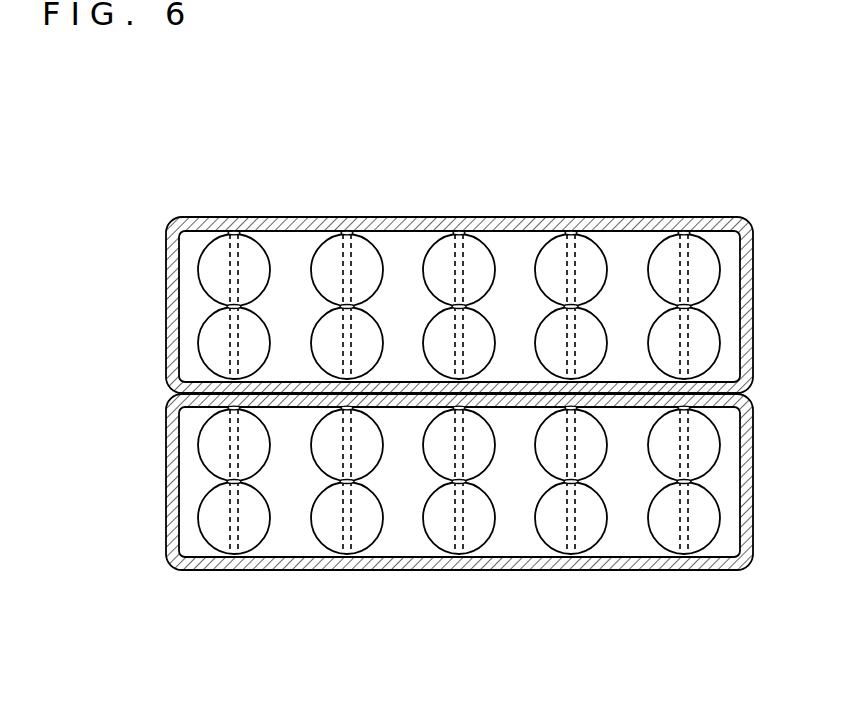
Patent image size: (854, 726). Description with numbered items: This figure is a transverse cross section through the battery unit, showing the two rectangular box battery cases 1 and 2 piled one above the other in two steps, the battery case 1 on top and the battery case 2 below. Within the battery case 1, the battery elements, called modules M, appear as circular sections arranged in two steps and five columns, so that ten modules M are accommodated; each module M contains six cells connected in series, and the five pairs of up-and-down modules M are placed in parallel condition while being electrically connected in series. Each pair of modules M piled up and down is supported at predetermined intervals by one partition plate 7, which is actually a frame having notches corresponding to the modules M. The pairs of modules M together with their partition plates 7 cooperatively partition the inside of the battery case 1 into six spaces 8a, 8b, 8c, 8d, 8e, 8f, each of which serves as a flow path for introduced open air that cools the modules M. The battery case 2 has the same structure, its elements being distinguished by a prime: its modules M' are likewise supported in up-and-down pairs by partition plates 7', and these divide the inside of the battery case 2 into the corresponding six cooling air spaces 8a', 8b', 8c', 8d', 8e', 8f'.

The battery case 1 is at (752, 290).
The battery case 2 is at (166, 463).
The partition plate 7 is at (441, 305).
The partition plate 7' is at (503, 488).
The space 8a is at (195, 213).
The space 8b is at (292, 221).
The space 8c is at (417, 221).
The space 8d is at (514, 221).
The space 8e is at (632, 213).
The space 8f is at (758, 236).
The space 8a' is at (172, 555).
The space 8b' is at (289, 575).
The space 8c' is at (388, 576).
The space 8d' is at (512, 576).
The space 8e' is at (612, 579).
The space 8f' is at (722, 579).
The module M is at (490, 279).
The module M' is at (492, 509).